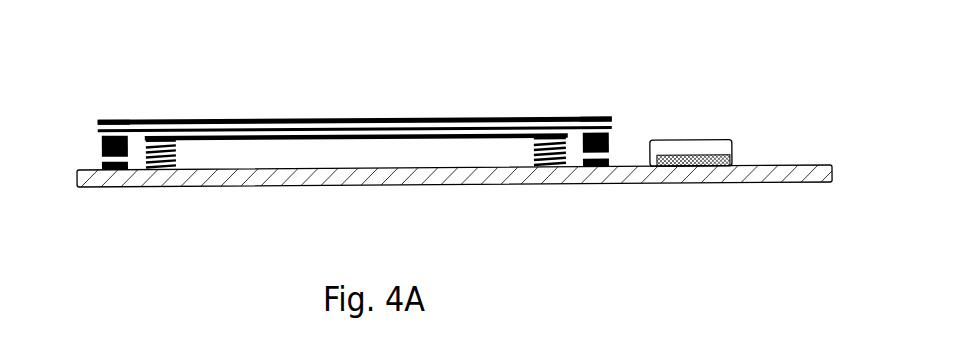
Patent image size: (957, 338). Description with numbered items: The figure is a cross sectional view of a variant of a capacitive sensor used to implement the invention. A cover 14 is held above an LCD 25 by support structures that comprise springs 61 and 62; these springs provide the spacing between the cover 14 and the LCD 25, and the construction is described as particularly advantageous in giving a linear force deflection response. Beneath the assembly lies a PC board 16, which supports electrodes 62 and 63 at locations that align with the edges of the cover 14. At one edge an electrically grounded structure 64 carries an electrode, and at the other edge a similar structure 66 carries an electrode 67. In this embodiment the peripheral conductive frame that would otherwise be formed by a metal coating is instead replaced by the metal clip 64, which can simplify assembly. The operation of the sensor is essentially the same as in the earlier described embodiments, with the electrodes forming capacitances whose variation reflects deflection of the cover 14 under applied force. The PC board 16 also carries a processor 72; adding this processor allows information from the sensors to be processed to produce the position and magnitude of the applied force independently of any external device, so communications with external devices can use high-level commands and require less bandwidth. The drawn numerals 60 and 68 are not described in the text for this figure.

The cover 14 is at (318, 119).
The PC board 16 is at (719, 183).
The LCD 25 is at (420, 150).
The spring contact 60 is at (177, 128).
The spring 61 is at (547, 114).
The electrode 62 is at (130, 186).
The electrode 63 is at (604, 167).
The electrically grounded structure 64 is at (129, 119).
The electrically grounded structure 66 is at (102, 143).
The electrode 67 is at (614, 138).
The conductive trace 68 is at (594, 116).
The processor 72 is at (708, 143).